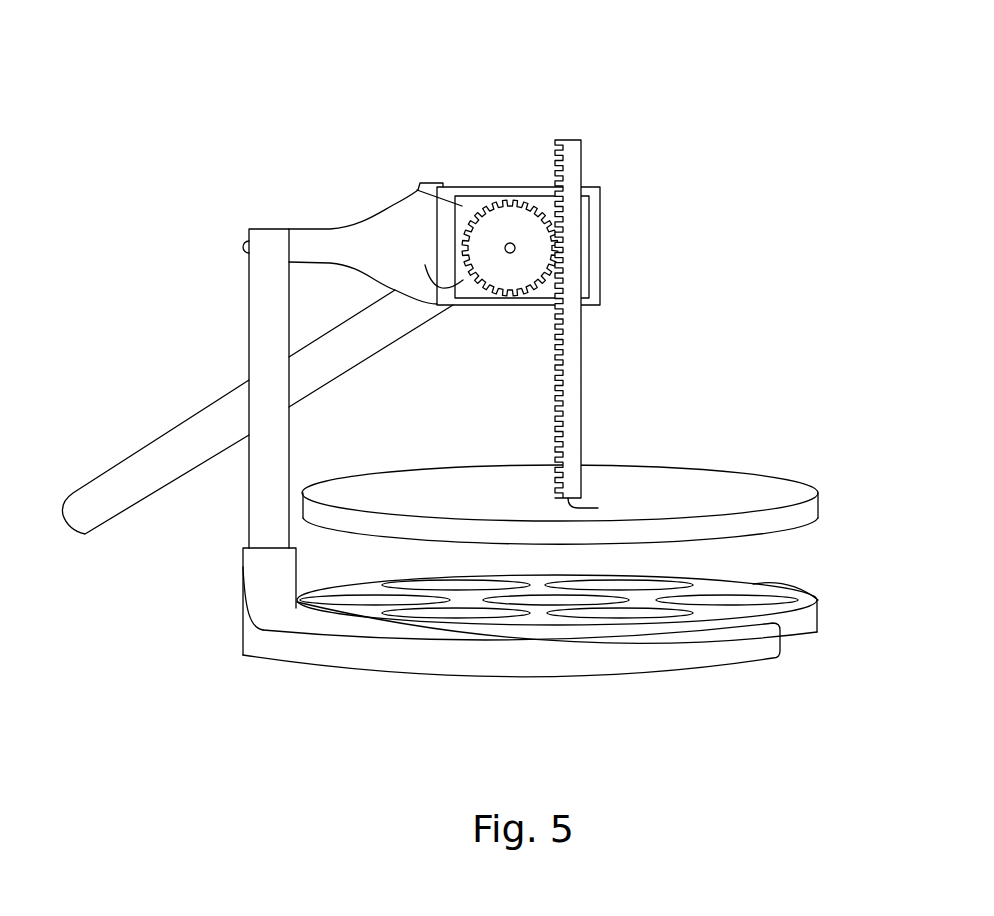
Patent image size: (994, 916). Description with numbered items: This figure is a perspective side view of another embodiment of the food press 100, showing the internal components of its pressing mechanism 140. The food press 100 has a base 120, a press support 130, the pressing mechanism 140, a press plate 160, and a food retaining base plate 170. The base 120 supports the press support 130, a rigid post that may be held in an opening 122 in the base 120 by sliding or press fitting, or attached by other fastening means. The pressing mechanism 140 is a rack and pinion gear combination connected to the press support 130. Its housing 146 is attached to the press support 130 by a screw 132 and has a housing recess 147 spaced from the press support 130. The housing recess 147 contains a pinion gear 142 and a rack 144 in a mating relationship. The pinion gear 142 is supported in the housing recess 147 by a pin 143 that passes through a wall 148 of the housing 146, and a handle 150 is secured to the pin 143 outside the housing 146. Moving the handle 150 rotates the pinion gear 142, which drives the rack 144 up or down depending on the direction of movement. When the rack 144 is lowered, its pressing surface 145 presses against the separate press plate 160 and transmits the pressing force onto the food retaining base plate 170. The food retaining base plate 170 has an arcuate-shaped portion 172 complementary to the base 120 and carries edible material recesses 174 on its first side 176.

The food press 100 is at (287, 38).
The base 120 is at (643, 668).
The opening 122 is at (243, 545).
The press support 130 is at (240, 340).
The screw 132 is at (245, 243).
The pressing mechanism 140 is at (618, 248).
The pinion gear 142 is at (502, 220).
The pin 143 is at (508, 254).
The rack 144 is at (583, 155).
The pressing surface 145 is at (598, 508).
The housing 146 is at (383, 208).
The housing recess 147 is at (443, 182).
The wall 148 is at (433, 262).
The handle 150 is at (113, 464).
The press plate 160 is at (685, 463).
The food retaining base plate 170 is at (800, 637).
The arcuate-shaped portion 172 is at (337, 618).
The edible material recesses 174 is at (615, 588).
The first side 176 is at (753, 585).